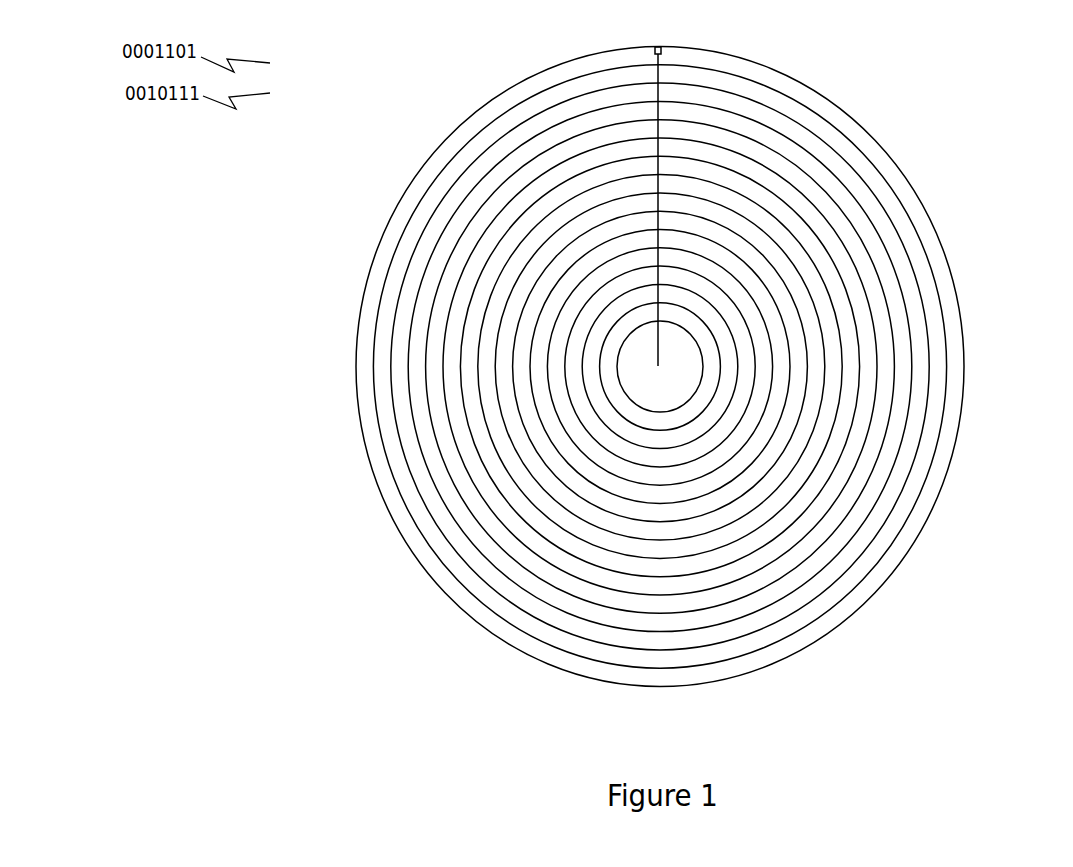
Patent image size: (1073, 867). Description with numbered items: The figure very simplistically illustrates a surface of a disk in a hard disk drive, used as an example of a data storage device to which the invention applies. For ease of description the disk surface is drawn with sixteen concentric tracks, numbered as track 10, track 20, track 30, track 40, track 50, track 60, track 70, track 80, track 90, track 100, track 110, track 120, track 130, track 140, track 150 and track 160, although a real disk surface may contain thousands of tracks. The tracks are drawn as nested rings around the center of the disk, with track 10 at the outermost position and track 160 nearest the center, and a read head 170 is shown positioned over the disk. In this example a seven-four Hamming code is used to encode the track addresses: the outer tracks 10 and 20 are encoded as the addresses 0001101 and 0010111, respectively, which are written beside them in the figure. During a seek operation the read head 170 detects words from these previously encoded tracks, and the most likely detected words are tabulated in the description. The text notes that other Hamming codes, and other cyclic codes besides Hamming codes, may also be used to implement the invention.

The track 10 is at (618, 367).
The track 20 is at (610, 366).
The track 30 is at (601, 366).
The track 40 is at (592, 366).
The track 50 is at (583, 367).
The track 60 is at (575, 366).
The track 70 is at (566, 366).
The track 80 is at (557, 367).
The track 90 is at (549, 366).
The track 100 is at (534, 366).
The track 110 is at (801, 367).
The track 120 is at (810, 366).
The track 130 is at (819, 366).
The track 140 is at (827, 379).
The track 150 is at (836, 404).
The track 160 is at (845, 429).
The read head 170 is at (706, 187).